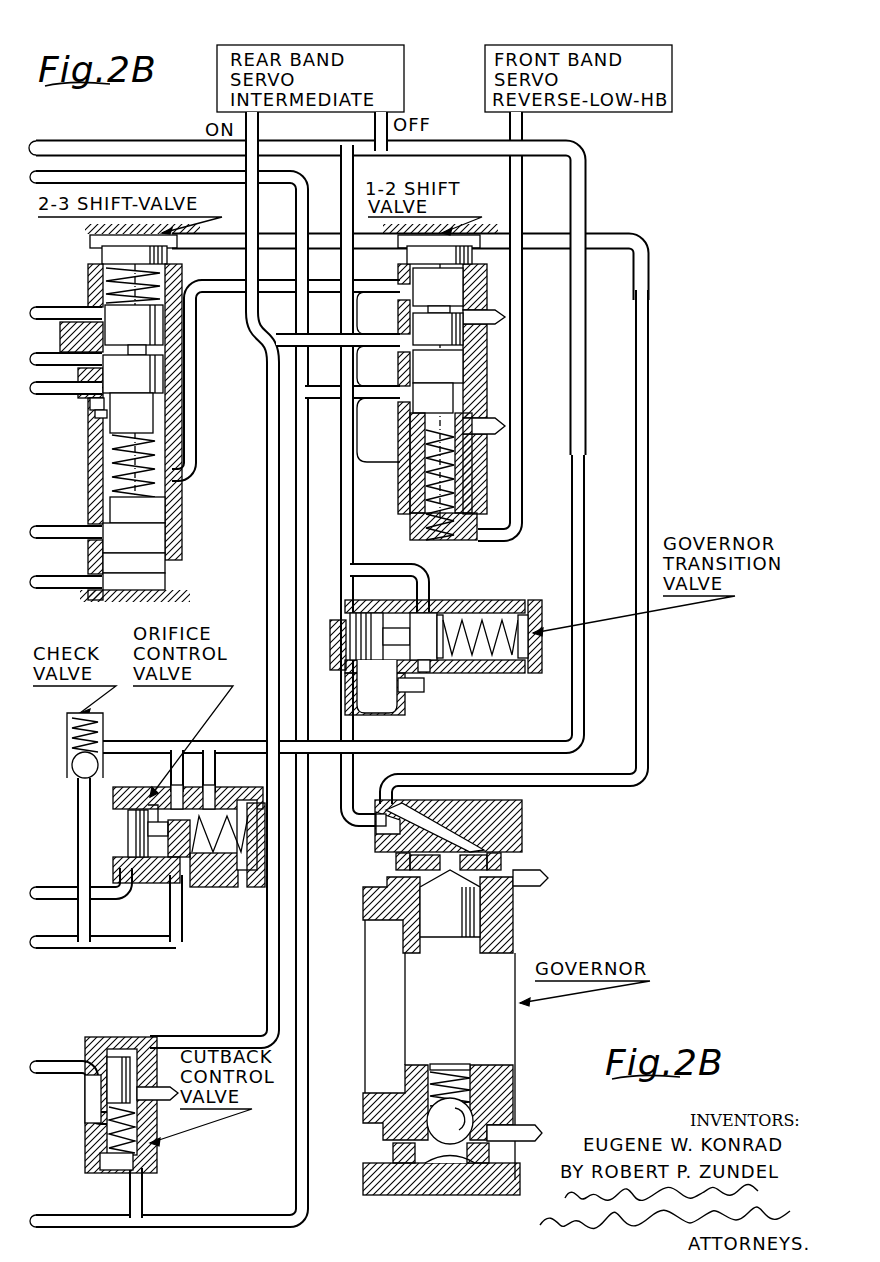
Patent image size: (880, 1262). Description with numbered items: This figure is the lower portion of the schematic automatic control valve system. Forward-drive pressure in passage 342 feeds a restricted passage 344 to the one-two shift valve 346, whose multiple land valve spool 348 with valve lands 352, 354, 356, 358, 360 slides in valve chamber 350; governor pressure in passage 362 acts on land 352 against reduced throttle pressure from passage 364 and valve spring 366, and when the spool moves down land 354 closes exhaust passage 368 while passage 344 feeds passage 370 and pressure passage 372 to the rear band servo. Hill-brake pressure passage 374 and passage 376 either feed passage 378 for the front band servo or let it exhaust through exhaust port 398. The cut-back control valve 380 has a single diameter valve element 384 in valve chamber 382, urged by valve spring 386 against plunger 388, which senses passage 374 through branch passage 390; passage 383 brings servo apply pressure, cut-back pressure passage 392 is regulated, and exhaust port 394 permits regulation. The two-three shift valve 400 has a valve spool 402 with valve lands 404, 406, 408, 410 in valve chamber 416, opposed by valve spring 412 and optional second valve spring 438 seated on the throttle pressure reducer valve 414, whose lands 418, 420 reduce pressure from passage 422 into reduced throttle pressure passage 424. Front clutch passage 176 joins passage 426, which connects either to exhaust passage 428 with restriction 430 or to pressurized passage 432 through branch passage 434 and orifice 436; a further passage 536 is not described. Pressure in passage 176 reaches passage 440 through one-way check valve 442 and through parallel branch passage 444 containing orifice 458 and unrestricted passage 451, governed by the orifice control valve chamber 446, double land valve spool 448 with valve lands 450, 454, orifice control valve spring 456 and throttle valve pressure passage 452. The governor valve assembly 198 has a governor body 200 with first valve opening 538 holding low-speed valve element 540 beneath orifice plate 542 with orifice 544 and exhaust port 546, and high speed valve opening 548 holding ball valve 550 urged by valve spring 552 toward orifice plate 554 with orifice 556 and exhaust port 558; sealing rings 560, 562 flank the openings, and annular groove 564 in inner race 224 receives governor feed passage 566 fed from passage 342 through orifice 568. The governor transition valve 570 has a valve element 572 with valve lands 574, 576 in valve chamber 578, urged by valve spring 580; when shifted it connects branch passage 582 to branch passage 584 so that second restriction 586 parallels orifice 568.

The passage 176 is at (60, 938).
The governor valve assembly 198 is at (520, 938).
The governor body 200 is at (505, 1078).
The stationary inner race 224 is at (523, 808).
The passage 342 is at (62, 144).
The restricted passage 344 is at (404, 346).
The one-two shift valve 346 is at (466, 363).
The multiple land valve spool 348 is at (466, 330).
The valve chamber 350 is at (468, 286).
The valve land 352 is at (478, 250).
The valve land 354 is at (452, 308).
The valve land 356 is at (456, 398).
The valve land 358 is at (473, 470).
The valve land 360 is at (456, 506).
The passage 362 is at (283, 238).
The passage 364 is at (378, 276).
The valve spring 366 is at (480, 530).
The exhaust passage 368 is at (505, 316).
The passage 370 is at (286, 333).
The pressure passage 372 is at (258, 126).
The hill-brake pressure passage 374 is at (34, 188).
The passage 376 is at (384, 400).
The passage 378 is at (523, 182).
The cut-back control valve 380 is at (146, 1150).
The single diameter valve chamber 382 is at (88, 1046).
The passage 383 is at (270, 1003).
The single diameter valve element 384 is at (118, 1058).
The valve spring 386 is at (86, 1120).
The plunger 388 is at (100, 1160).
The branch passage 390 is at (143, 1190).
The cut-back pressure passage 392 is at (40, 1074).
The exhaust port 394 is at (156, 1088).
The exhaust port 398 is at (505, 428).
The two-three shift valve 400 is at (178, 338).
The valve spool 402 is at (150, 378).
The valve land 404 is at (150, 412).
The valve land 406 is at (164, 340).
The valve land 408 is at (90, 267).
The valve land 410 is at (136, 246).
The valve spring 412 is at (158, 460).
The throttle pressure reducer valve 414 is at (150, 592).
The two-three shift valve chamber 416 is at (160, 398).
The land 418 is at (165, 520).
The land 420 is at (165, 560).
The passage 422 is at (60, 578).
The reduced throttle pressure passage 424 is at (188, 487).
The passage 426 is at (40, 396).
The passage 428 is at (55, 346).
The restriction 430 is at (92, 408).
The passage 432 is at (50, 298).
The branch passage 434 is at (100, 416).
The flow restricting orifice 436 is at (66, 499).
The second valve spring 438 is at (166, 280).
The passage 440 is at (540, 748).
The one-way check valve 442 is at (72, 774).
The parallel branch passage 444 is at (176, 916).
The orifice control valve chamber 446 is at (218, 797).
The double land valve spool 448 is at (168, 836).
The valve land 450 is at (204, 887).
The relatively unrestricted passage 451 is at (216, 752).
The throttle valve pressure passage 452 is at (52, 877).
The valve land 454 is at (128, 826).
The orifice control valve spring 456 is at (252, 887).
The flow restricting orifice 458 is at (170, 790).
The passage 536 is at (44, 527).
The first valve opening 538 is at (472, 940).
The low-speed valve element 540 is at (440, 940).
The orifice plate 542 is at (396, 868).
The flow restricting orifice 544 is at (512, 836).
The exhaust port 546 is at (542, 876).
The high speed valve opening 548 is at (465, 1064).
The ball valve 550 is at (432, 1125).
The valve spring 552 is at (440, 1068).
The orifice plate 554 is at (475, 1165).
The orifice 556 is at (410, 1165).
The exhaust port 558 is at (526, 1125).
The sealing ring 560 is at (396, 860).
The sealing ring 562 is at (502, 860).
The annular groove 564 is at (445, 815).
The governor feed passage 566 is at (356, 812).
The flow restricting orifice 568 is at (384, 566).
The governor transition valve 570 is at (456, 660).
The valve element 572 is at (352, 608).
The valve land 574 is at (425, 672).
The valve land 576 is at (444, 616).
The valve chamber 578 is at (426, 612).
The valve spring 580 is at (512, 615).
The branch passage 582 is at (433, 588).
The branch passage 584 is at (392, 710).
The second restriction 586 is at (418, 692).